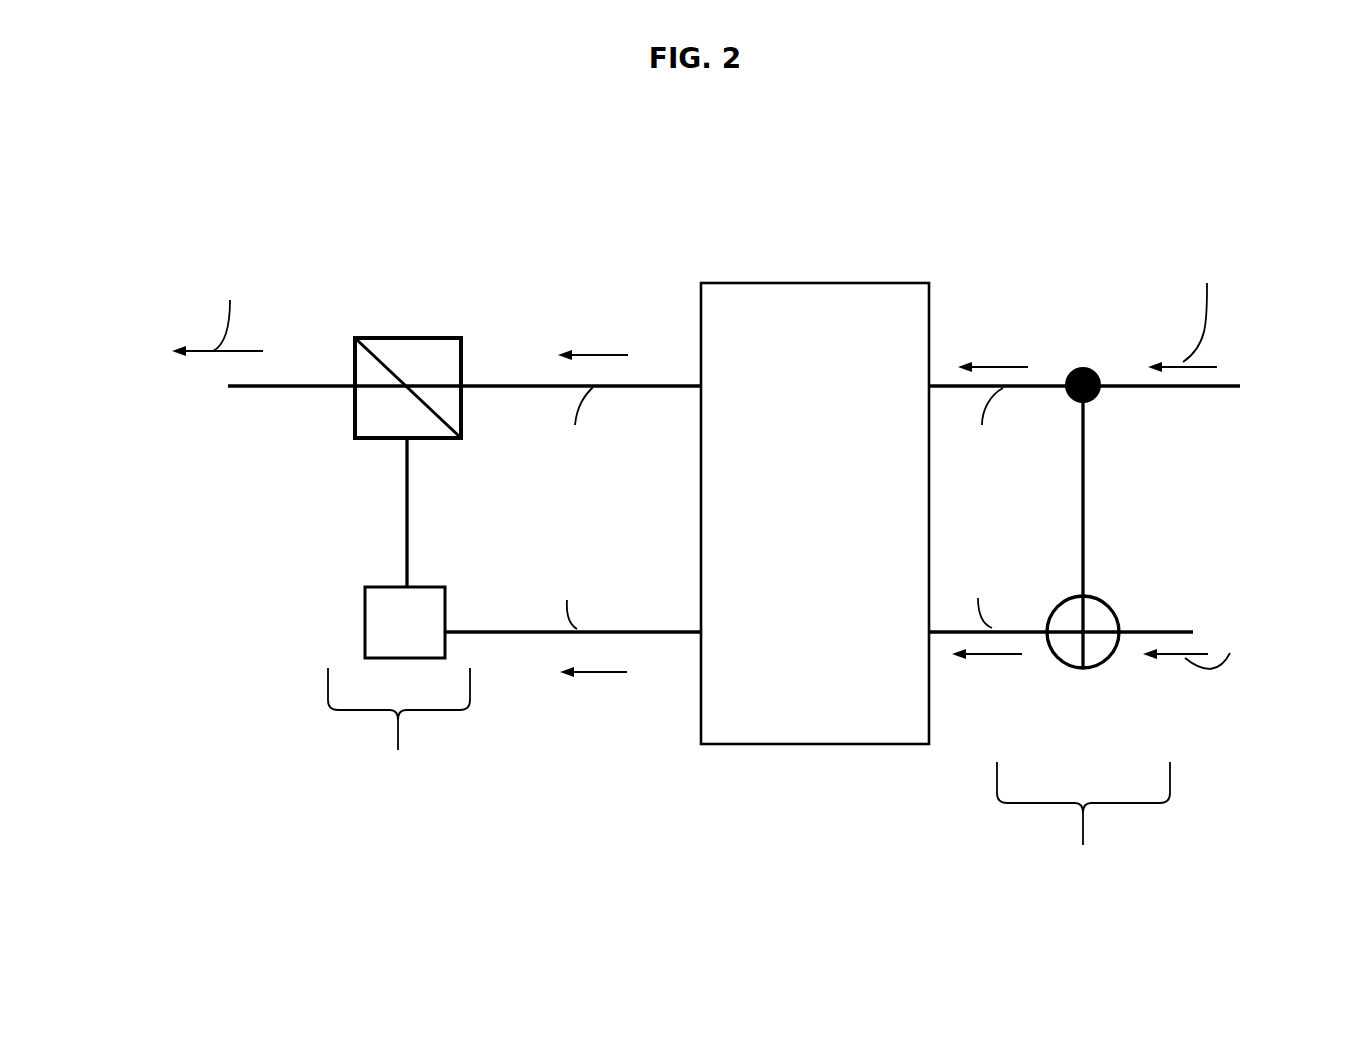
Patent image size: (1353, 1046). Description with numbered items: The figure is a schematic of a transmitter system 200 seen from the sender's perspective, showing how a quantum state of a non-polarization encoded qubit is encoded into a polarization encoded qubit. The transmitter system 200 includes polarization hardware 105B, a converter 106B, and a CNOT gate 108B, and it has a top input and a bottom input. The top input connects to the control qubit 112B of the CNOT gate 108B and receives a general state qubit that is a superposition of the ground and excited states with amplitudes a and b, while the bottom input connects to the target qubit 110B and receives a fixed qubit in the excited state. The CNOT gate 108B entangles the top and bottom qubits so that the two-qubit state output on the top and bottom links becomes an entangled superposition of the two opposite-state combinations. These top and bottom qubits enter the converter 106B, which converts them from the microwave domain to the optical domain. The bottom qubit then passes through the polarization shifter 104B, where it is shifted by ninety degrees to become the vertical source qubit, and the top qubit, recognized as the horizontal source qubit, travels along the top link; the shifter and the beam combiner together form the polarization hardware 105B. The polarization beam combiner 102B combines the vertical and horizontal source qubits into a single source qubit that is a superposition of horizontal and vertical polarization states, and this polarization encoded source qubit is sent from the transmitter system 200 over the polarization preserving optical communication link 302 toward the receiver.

The transmitter system 200 is at (327, 158).
The polarization beam combiner 102B is at (402, 358).
The polarization shifter 104B is at (370, 610).
The polarization hardware 105B is at (399, 612).
The converter 106B is at (815, 513).
The CNOT gate 108B is at (976, 513).
The target qubit 110B is at (1058, 658).
The control qubit 112B is at (1068, 370).
The optical communication link 302 is at (297, 386).